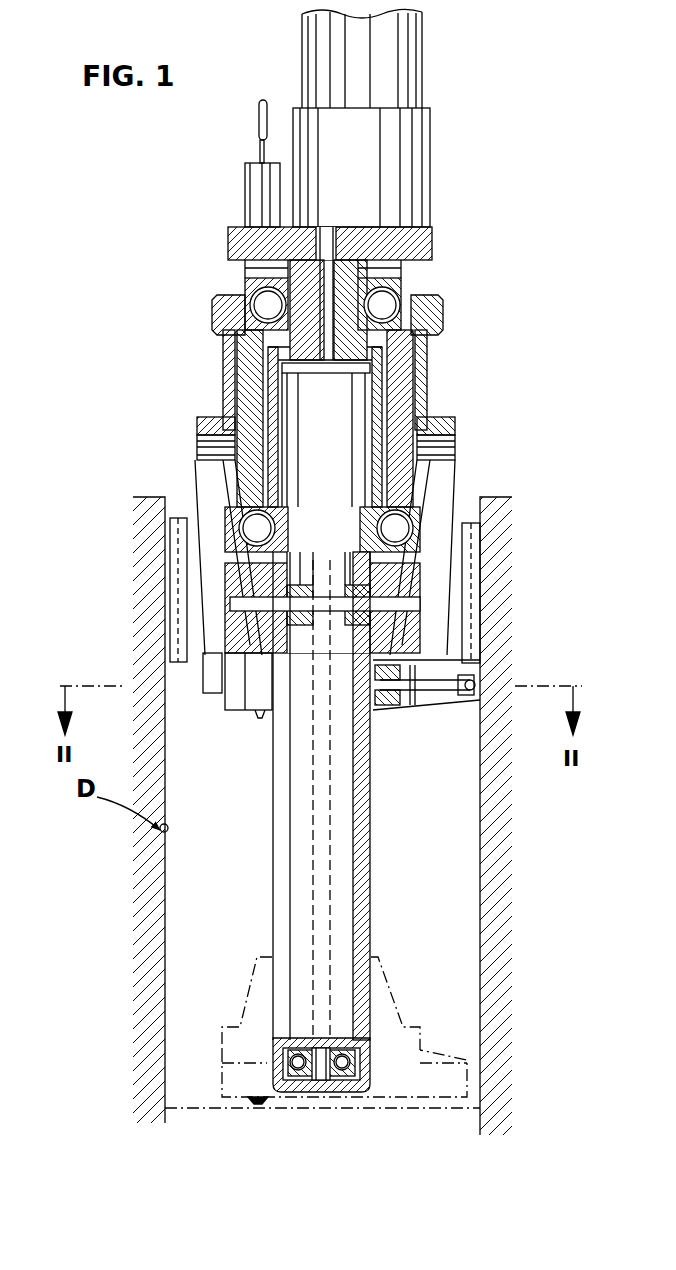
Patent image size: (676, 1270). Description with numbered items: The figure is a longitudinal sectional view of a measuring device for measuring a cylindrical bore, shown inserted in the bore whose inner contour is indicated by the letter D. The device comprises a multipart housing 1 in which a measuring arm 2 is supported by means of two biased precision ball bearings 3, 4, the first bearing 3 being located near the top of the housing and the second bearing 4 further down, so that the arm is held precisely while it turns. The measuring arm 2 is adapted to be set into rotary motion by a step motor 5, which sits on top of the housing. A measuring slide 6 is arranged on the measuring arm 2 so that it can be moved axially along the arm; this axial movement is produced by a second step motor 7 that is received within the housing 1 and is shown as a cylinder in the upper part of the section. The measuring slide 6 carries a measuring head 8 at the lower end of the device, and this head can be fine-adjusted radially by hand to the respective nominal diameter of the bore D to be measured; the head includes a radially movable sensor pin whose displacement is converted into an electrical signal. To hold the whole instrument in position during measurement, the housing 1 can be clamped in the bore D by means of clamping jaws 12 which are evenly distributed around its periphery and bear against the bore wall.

The housing 1 is at (220, 255).
The measuring arm 2 is at (376, 845).
The precision ball bearing 3 is at (240, 292).
The precision ball bearing 4 is at (255, 526).
The step motor 5 is at (364, 171).
The measuring slide 6 is at (252, 985).
The step motor 7 is at (332, 447).
The measuring head 8 is at (228, 1084).
The clamping jaws 12 is at (175, 597).